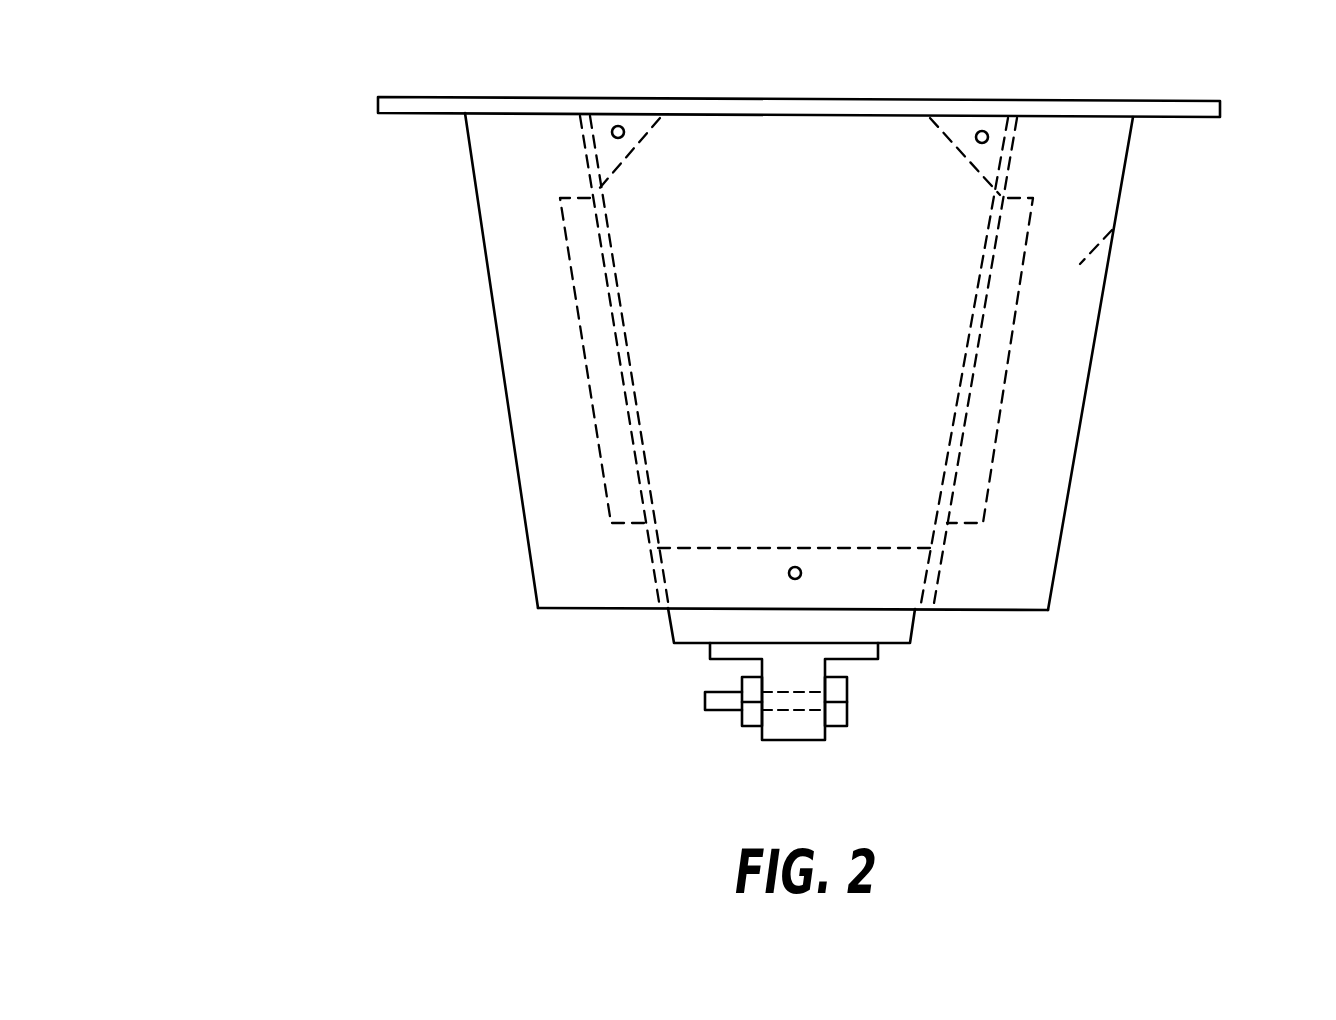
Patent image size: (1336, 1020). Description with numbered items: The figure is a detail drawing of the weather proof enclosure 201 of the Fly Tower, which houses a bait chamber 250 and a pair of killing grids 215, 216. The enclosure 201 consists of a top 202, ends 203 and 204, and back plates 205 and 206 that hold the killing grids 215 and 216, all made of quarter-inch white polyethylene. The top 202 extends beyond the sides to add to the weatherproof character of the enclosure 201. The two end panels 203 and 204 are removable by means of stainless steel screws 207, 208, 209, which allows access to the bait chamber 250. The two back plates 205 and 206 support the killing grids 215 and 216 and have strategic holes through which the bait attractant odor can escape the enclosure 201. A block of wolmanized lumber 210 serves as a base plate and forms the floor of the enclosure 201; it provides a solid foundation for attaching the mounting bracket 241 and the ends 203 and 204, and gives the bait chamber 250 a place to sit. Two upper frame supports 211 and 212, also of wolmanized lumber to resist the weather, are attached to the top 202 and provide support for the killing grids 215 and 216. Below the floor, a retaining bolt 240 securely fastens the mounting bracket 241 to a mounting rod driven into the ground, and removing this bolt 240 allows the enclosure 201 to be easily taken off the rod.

The weather proof enclosure 201 is at (793, 315).
The top 202 is at (378, 104).
The end 203 is at (512, 220).
The end 204 is at (1117, 225).
The back plate 205 is at (746, 322).
The back plate 206 is at (965, 340).
The stainless steel screw 207 is at (623, 124).
The stainless steel screw 208 is at (987, 129).
The stainless steel screw 209 is at (817, 507).
The block of wolmanized lumber 210 is at (715, 593).
The upper frame support 211 is at (697, 182).
The upper frame support 212 is at (973, 167).
The killing grid 215 is at (588, 403).
The killing grid 216 is at (1007, 407).
The bait chamber 250 is at (873, 487).
The retaining bolt 240 is at (705, 711).
The mounting bracket 241 is at (708, 657).